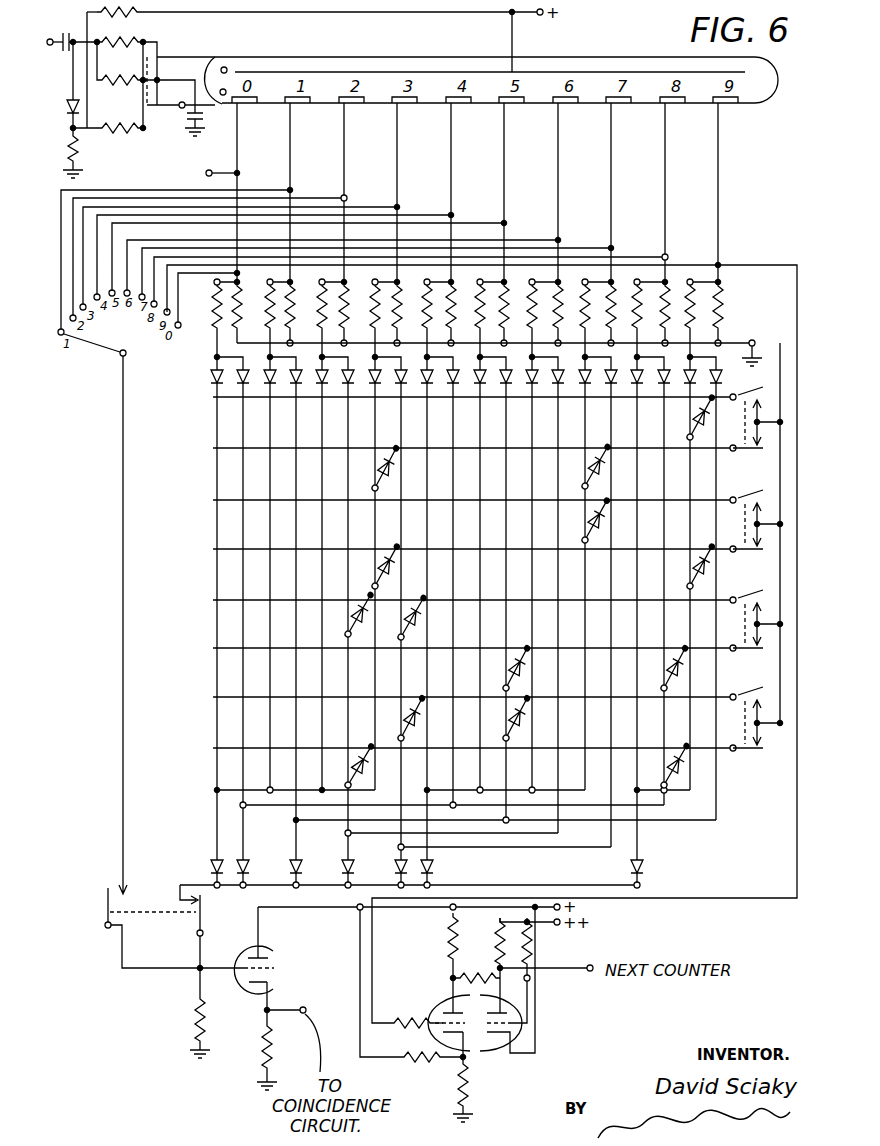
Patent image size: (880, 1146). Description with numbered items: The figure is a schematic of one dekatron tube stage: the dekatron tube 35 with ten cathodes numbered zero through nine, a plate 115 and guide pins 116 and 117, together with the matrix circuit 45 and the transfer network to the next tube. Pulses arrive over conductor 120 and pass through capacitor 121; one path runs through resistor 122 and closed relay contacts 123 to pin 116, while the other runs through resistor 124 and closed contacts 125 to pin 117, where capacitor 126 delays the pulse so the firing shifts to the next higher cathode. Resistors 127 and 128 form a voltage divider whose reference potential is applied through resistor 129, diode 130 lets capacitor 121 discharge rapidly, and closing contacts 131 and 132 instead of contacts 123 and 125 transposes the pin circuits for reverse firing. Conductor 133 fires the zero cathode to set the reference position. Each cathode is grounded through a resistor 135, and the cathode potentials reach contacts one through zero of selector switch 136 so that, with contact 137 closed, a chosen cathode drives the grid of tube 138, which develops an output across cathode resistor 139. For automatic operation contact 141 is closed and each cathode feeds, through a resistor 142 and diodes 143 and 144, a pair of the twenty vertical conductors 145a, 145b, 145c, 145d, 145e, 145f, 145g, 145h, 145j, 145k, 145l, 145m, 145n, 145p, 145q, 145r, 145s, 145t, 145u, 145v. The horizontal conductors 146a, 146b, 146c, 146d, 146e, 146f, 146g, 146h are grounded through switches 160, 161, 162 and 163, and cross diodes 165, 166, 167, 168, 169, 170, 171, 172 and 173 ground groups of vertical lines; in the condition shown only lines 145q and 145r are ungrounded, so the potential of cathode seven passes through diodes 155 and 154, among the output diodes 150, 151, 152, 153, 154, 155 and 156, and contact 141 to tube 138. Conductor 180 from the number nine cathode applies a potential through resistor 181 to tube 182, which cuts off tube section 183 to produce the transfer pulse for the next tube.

The dekatron tube 35 is at (574, 56).
The plate 115 is at (652, 70).
The guide pin 116 is at (227, 67).
The guide pin 117 is at (225, 96).
The conductor 120 is at (50, 38).
The capacitor 121 is at (63, 46).
The resistor 122 is at (132, 40).
The relay contacts 123 is at (161, 49).
The resistor 124 is at (140, 76).
The relay contacts 125 is at (161, 96).
The capacitor 126 is at (200, 125).
The resistor 127 is at (141, 14).
The resistor 128 is at (80, 150).
The resistor 129 is at (137, 124).
The diode 130 is at (76, 118).
The relay contacts 131 is at (154, 111).
The relay contacts 132 is at (161, 67).
The conductor 133 is at (208, 176).
The cathode resistor 135 is at (240, 298).
The selector switch 136 is at (118, 366).
The contact 137 is at (108, 886).
The tube 138 is at (245, 958).
The cathode resistor 139 is at (262, 1062).
The contact 141 is at (201, 898).
The resistor 142 is at (214, 312).
The diode 143 is at (219, 388).
The diode 144 is at (245, 388).
The vertical conductor 145a is at (208, 634).
The vertical conductor 145b is at (234, 634).
The vertical conductor 145c is at (261, 586).
The vertical conductor 145d is at (287, 634).
The vertical conductor 145e is at (313, 586).
The vertical conductor 145f is at (339, 634).
The vertical conductor 145g is at (366, 586).
The vertical conductor 145h is at (392, 634).
The vertical conductor 145j is at (418, 634).
The vertical conductor 145k is at (444, 594).
The vertical conductor 145l is at (471, 586).
The vertical conductor 145m is at (497, 601).
The vertical conductor 145n is at (523, 586).
The vertical conductor 145p is at (549, 608).
The vertical conductor 145q is at (576, 586).
The vertical conductor 145r is at (602, 615).
The vertical conductor 145s is at (628, 634).
The vertical conductor 145t is at (655, 594).
The vertical conductor 145u is at (681, 586).
The vertical conductor 145v is at (707, 601).
The horizontal conductor 146a is at (213, 397).
The horizontal conductor 146b is at (213, 448).
The horizontal conductor 146c is at (213, 500).
The horizontal conductor 146d is at (213, 549).
The horizontal conductor 146e is at (213, 600).
The horizontal conductor 146f is at (213, 648).
The horizontal conductor 146g is at (213, 697).
The horizontal conductor 146h is at (213, 748).
The diode 150 is at (212, 866).
The diode 151 is at (240, 866).
The diode 152 is at (290, 866).
The diode 153 is at (342, 866).
The diode 154 is at (395, 866).
The diode 155 is at (434, 867).
The diode 156 is at (643, 867).
The switch 160 is at (751, 419).
The switch 161 is at (751, 521).
The switch 162 is at (751, 620).
The switch 163 is at (751, 719).
The diode 165 is at (388, 568).
The diode 166 is at (673, 763).
The diode 167 is at (516, 665).
The diode 168 is at (361, 763).
The diode 169 is at (414, 622).
The diode 170 is at (414, 716).
The diode 171 is at (596, 465).
The diode 172 is at (596, 518).
The diode 173 is at (704, 573).
The conductor 180 is at (778, 264).
The resistor 181 is at (408, 1013).
The tube 182 is at (445, 1010).
The tube section 183 is at (492, 1050).
The matrix circuit 45 is at (192, 384).